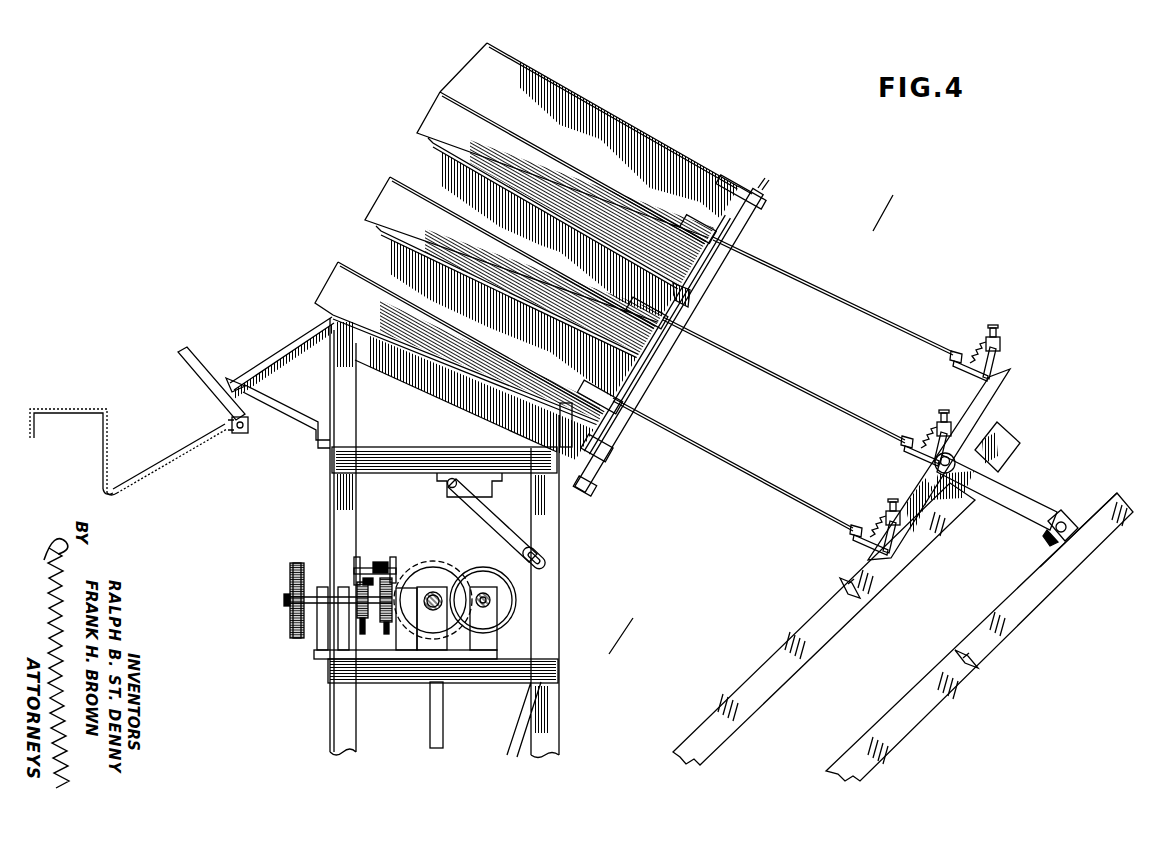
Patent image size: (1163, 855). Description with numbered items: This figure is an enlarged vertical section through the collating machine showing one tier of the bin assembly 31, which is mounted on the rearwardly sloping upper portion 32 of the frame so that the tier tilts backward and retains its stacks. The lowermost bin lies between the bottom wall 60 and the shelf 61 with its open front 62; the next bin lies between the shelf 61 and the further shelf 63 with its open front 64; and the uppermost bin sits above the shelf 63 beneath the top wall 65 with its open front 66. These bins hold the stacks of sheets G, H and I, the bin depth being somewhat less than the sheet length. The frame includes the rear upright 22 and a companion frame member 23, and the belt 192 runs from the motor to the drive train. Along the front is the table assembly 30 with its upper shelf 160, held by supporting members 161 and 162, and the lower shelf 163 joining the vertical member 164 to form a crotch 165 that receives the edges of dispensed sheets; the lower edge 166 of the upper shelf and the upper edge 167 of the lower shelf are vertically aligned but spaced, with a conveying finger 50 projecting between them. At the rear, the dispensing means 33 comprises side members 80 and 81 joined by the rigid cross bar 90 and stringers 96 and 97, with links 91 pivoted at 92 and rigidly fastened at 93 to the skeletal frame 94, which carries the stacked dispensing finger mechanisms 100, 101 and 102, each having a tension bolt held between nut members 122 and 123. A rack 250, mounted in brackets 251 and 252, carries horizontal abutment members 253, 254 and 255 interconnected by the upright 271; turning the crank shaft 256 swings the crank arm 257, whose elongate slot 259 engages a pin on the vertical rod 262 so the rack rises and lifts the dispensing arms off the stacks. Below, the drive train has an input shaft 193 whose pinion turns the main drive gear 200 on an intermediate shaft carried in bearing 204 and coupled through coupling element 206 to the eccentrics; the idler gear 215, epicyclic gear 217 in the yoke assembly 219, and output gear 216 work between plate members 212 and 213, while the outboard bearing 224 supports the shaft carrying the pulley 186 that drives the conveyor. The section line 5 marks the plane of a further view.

The open front 66 is at (486, 62).
The top wall 65 is at (628, 124).
The stack of sheets I is at (432, 118).
The open front 64 is at (427, 168).
The further shelf 63 is at (618, 247).
The stack of sheets H is at (387, 197).
The open front 62 is at (368, 250).
The shelf 61 is at (475, 283).
The stack of sheets G is at (332, 278).
The bottom wall 60 is at (483, 400).
The bin assembly 31 is at (712, 150).
The rack 250 is at (648, 398).
The upright 271 is at (652, 349).
The bracket 251 is at (736, 190).
The horizontal abutment member 253 is at (688, 280).
The horizontal abutment member 254 is at (637, 372).
The horizontal abutment member 255 is at (583, 450).
The vertical rod 262 is at (612, 450).
The bracket 252 is at (593, 490).
The left post 23 is at (327, 713).
The upright 22 is at (556, 733).
The belt 192 is at (443, 738).
The rearwardly sloping upper portion 32 is at (427, 383).
The crank shaft 256 is at (450, 477).
The crank arm 257 is at (490, 518).
The elongate slot 259 is at (545, 553).
The upper shelf 160 is at (283, 348).
The supporting member 161 is at (302, 338).
The lower edge 166 is at (224, 380).
The supporting member 162 is at (292, 407).
The conveying platform or table assembly 30 is at (205, 458).
The vertical member 164 is at (105, 453).
The crotch 165 is at (122, 470).
The lower shelf 163 is at (155, 470).
The conveying finger 50 is at (200, 373).
The upper edge 167 is at (230, 428).
The upstanding plate member 213 is at (343, 640).
The outboard bearing 224 is at (320, 634).
The pulley 186 is at (293, 578).
The yoke assembly 219 is at (353, 561).
The epicyclic gear 217 is at (380, 562).
The output gear 216 is at (363, 634).
The idler gear 215 is at (388, 634).
The upstanding plate member 212 is at (406, 620).
The main drive gear 200 is at (421, 566).
The detachable coupling element 206 is at (438, 590).
The input shaft 193 is at (485, 596).
The bearing 204 is at (433, 645).
The dispensing assembly 33 is at (1024, 423).
The skeletal frame 94 is at (1015, 385).
The fastener 93 is at (940, 453).
The link 91 is at (1017, 497).
The pivot 92 is at (1058, 513).
The side member 80 is at (832, 618).
The horizontal stringer 96 is at (845, 577).
The side member 81 is at (995, 617).
The rigid cross bar 90 is at (1088, 520).
The horizontal stringer 97 is at (974, 655).
The dispensing finger mechanism 100 is at (965, 340).
The nut member 123 is at (1020, 345).
The nut member 122 is at (1021, 324).
The dispensing finger mechanism 101 is at (900, 457).
The dispensing finger mechanism 102 is at (828, 533).
The section line 5- 5 is at (866, 192).